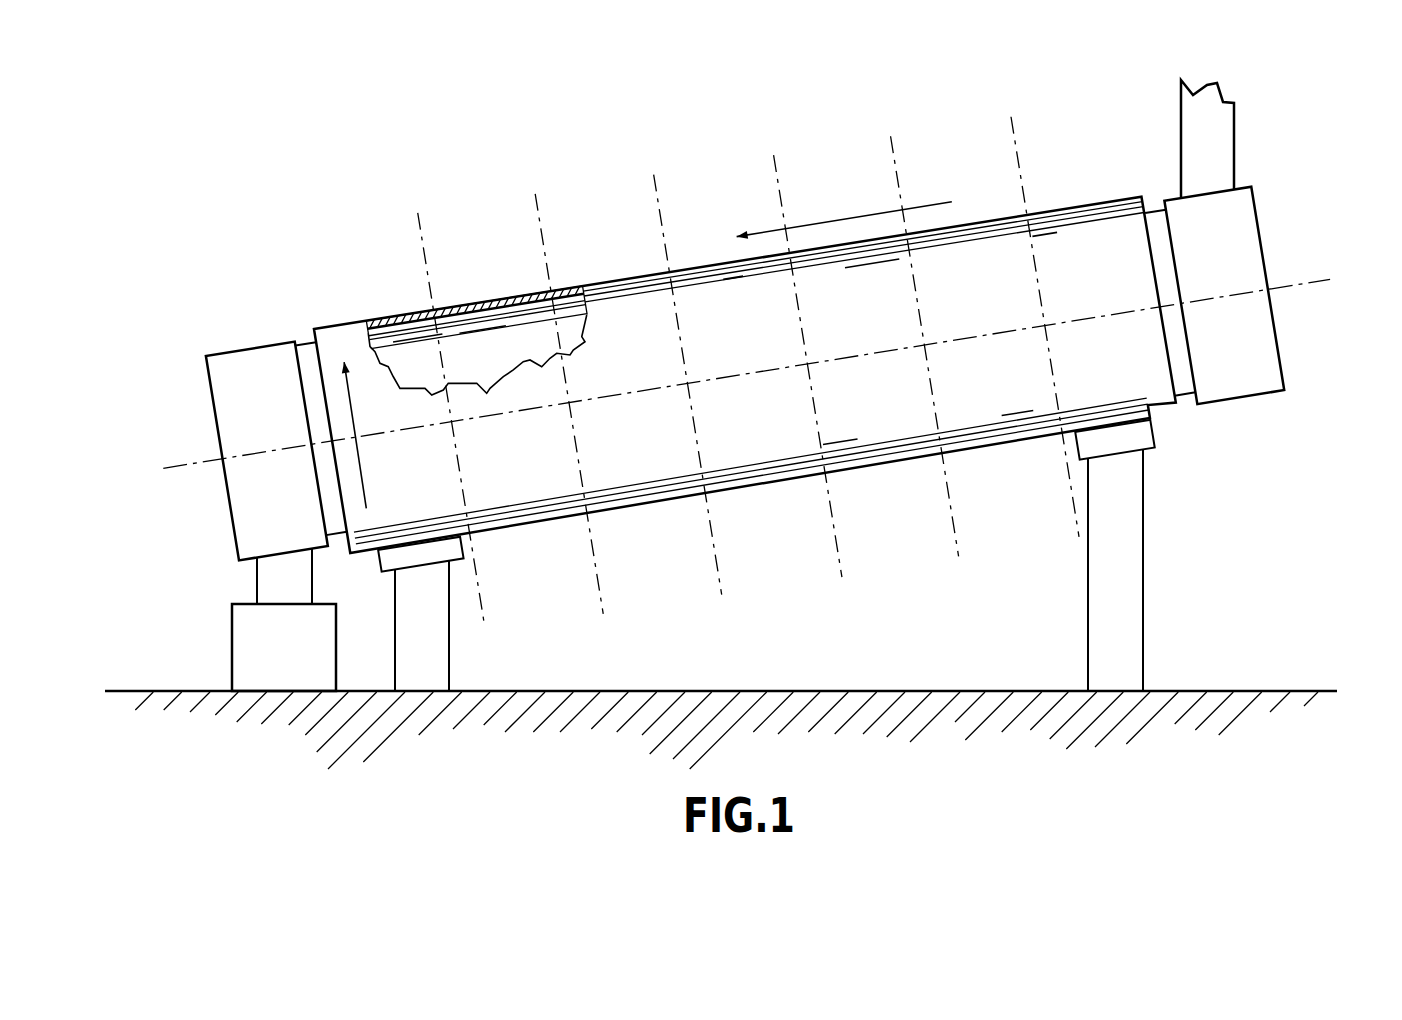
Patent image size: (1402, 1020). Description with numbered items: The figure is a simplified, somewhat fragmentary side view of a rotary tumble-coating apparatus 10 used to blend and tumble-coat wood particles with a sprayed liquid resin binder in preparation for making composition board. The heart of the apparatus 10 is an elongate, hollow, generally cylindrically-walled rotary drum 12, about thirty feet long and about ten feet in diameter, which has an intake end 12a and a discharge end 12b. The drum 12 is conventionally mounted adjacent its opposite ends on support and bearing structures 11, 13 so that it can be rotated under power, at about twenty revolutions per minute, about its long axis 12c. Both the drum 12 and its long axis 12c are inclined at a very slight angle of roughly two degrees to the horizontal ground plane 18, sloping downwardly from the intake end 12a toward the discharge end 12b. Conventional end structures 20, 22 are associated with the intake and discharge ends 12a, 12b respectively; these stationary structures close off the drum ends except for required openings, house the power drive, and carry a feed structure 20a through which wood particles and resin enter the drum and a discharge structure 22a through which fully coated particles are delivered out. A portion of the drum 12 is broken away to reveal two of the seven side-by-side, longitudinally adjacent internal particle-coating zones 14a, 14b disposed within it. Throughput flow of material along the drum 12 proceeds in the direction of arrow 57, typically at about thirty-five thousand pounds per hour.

The rotary tumble-coating apparatus 10 is at (468, 186).
The support and bearing structure 11 is at (442, 653).
The rotary drum 12 is at (628, 274).
The intake end 12a is at (1150, 200).
The discharge end 12b is at (314, 337).
The long axis 12c is at (1305, 280).
The support and bearing structure 13 is at (1135, 578).
The tumble-coating zone 14a is at (423, 371).
The tumble-coating zone 14b is at (515, 354).
The ground plane 18 is at (887, 688).
The end structure 20 is at (1247, 338).
The feed structure 20a is at (1222, 143).
The end structure 22 is at (241, 406).
The discharge structure 22a is at (248, 644).
The arrow 57 is at (852, 217).